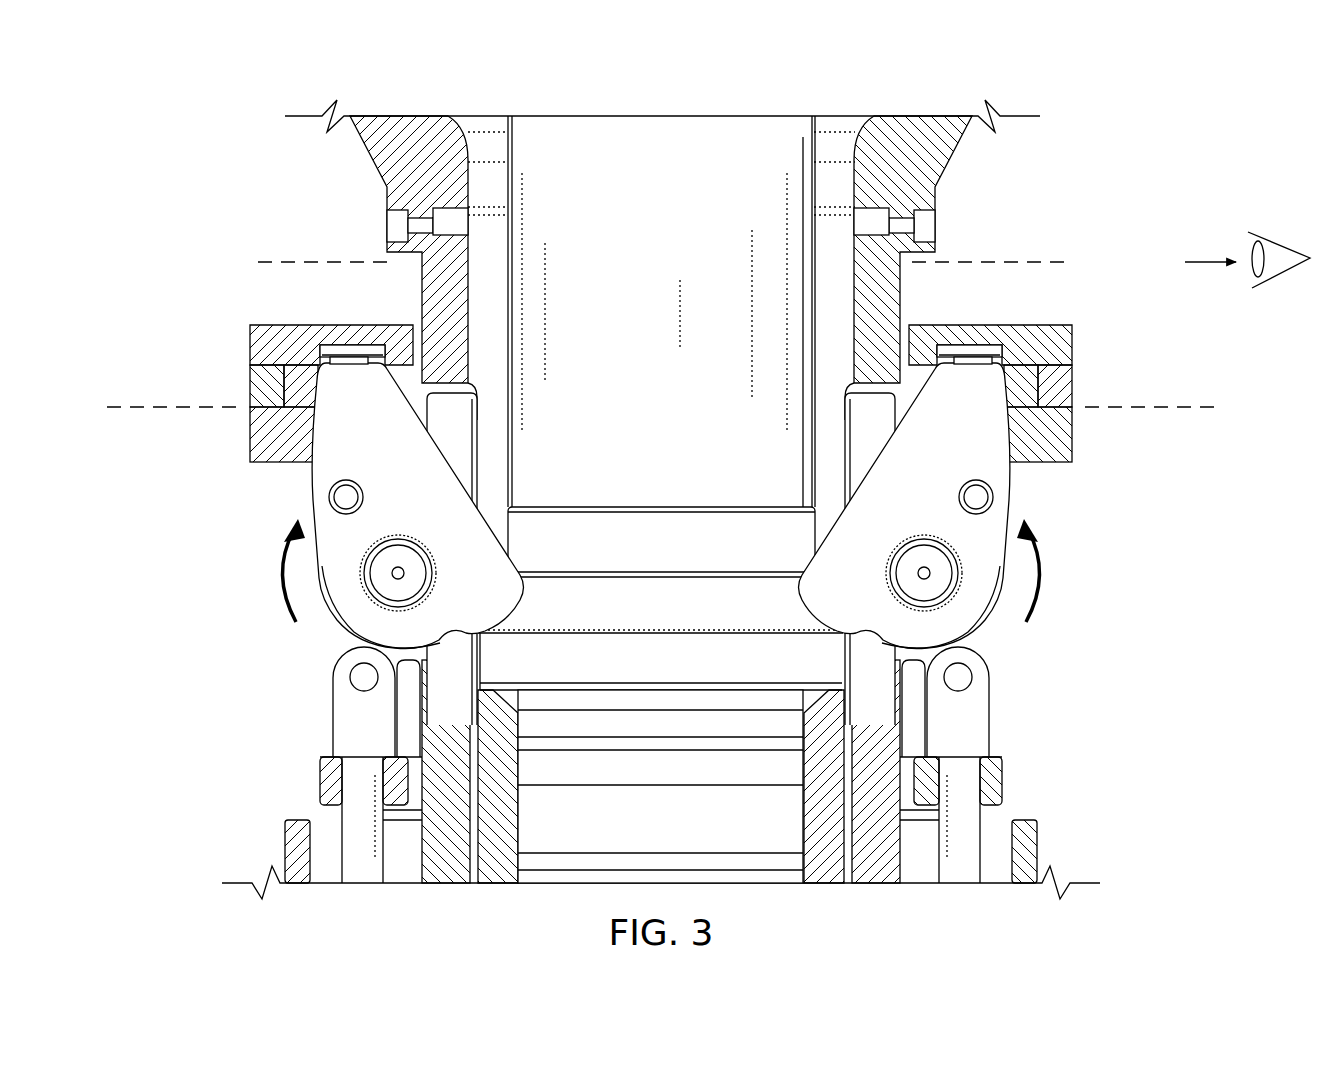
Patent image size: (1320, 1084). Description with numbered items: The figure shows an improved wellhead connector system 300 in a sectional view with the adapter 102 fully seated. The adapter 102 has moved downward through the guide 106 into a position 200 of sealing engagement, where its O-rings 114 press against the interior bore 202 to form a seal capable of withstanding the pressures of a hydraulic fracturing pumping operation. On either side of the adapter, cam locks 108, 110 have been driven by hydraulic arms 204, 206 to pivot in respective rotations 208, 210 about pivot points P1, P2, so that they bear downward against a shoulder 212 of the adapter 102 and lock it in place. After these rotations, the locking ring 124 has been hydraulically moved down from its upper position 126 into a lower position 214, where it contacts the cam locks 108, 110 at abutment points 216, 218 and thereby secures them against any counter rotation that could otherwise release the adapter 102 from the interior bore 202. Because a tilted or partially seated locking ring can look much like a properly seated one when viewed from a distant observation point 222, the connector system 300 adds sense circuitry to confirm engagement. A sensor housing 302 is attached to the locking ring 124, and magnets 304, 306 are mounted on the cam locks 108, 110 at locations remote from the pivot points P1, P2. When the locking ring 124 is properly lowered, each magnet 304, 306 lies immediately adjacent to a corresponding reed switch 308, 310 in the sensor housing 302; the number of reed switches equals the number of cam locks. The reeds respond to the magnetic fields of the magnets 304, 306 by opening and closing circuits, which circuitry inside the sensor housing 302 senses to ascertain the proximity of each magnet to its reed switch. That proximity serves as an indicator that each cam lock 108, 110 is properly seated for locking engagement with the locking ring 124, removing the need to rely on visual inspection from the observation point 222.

The adapter 102 is at (824, 142).
The guide 106 is at (372, 154).
The cam lock 108 is at (312, 512).
The cam lock 110 is at (1010, 512).
The O-rings 114 is at (703, 742).
The locking ring 124 is at (250, 440).
The position 126 is at (322, 262).
The position of sealing engagement 200 is at (497, 677).
The interior bore 202 is at (800, 820).
The hydraulic arm 204 is at (357, 832).
The hydraulic arm 206 is at (965, 832).
The rotation 208 is at (286, 575).
The rotation 210 is at (1036, 587).
The shoulder 212 is at (622, 578).
The lower position 214 is at (172, 406).
The abutment point 216 is at (332, 420).
The abutment point 218 is at (990, 420).
The observation point 222 is at (1207, 262).
The connector system 300 is at (174, 224).
The sensor housing 302 is at (234, 342).
The magnet 304 is at (353, 364).
The magnet 306 is at (969, 364).
The reed switch 308 is at (342, 345).
The reed switch 310 is at (960, 345).
The pivot point P1 is at (366, 596).
The pivot point P2 is at (956, 596).